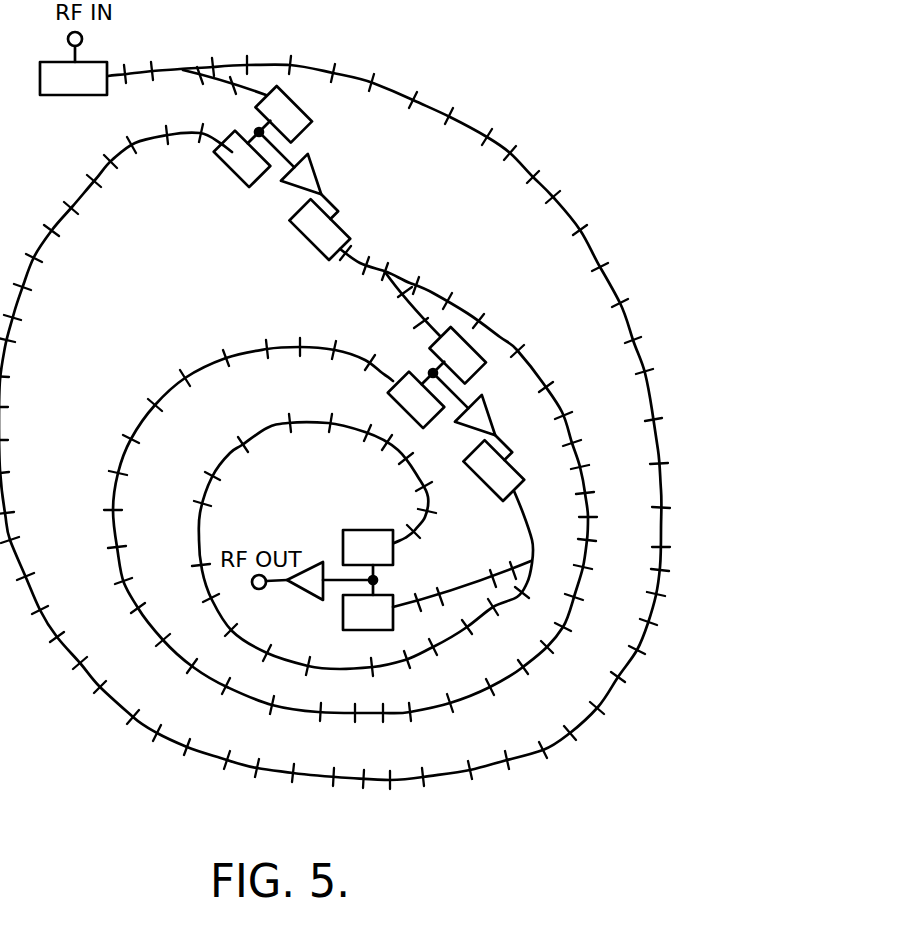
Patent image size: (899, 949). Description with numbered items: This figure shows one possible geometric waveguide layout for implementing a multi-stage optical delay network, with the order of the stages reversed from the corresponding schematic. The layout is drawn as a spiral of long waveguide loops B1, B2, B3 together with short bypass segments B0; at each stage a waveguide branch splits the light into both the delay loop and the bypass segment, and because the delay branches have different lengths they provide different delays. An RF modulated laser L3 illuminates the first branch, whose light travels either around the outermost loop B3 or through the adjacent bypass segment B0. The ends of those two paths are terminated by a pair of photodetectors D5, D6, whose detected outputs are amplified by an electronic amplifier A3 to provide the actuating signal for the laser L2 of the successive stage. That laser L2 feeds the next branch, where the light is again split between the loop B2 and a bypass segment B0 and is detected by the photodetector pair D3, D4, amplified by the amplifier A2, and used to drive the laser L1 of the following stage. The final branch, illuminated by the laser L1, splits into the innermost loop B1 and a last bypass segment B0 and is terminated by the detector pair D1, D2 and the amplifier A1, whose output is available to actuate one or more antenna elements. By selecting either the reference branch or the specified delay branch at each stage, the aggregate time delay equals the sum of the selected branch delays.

The RF modulated laser L3 is at (73, 78).
The input laser L2 is at (319, 229).
The input laser L1 is at (493, 470).
The photodetector D1 is at (368, 612).
The photodetector D2 is at (368, 547).
The photodetector D3 is at (416, 400).
The photodetector D4 is at (457, 355).
The photodetector D5 is at (283, 114).
The photodetector D6 is at (242, 159).
The electronic amplifier A1 is at (305, 592).
The electronic amplifier A2 is at (491, 422).
The electronic amplifier A3 is at (312, 177).
The bypass segment B0 is at (357, 339).
The waveguide loop B1 is at (362, 545).
The waveguide loop B2 is at (350, 484).
The waveguide loop B3 is at (335, 422).